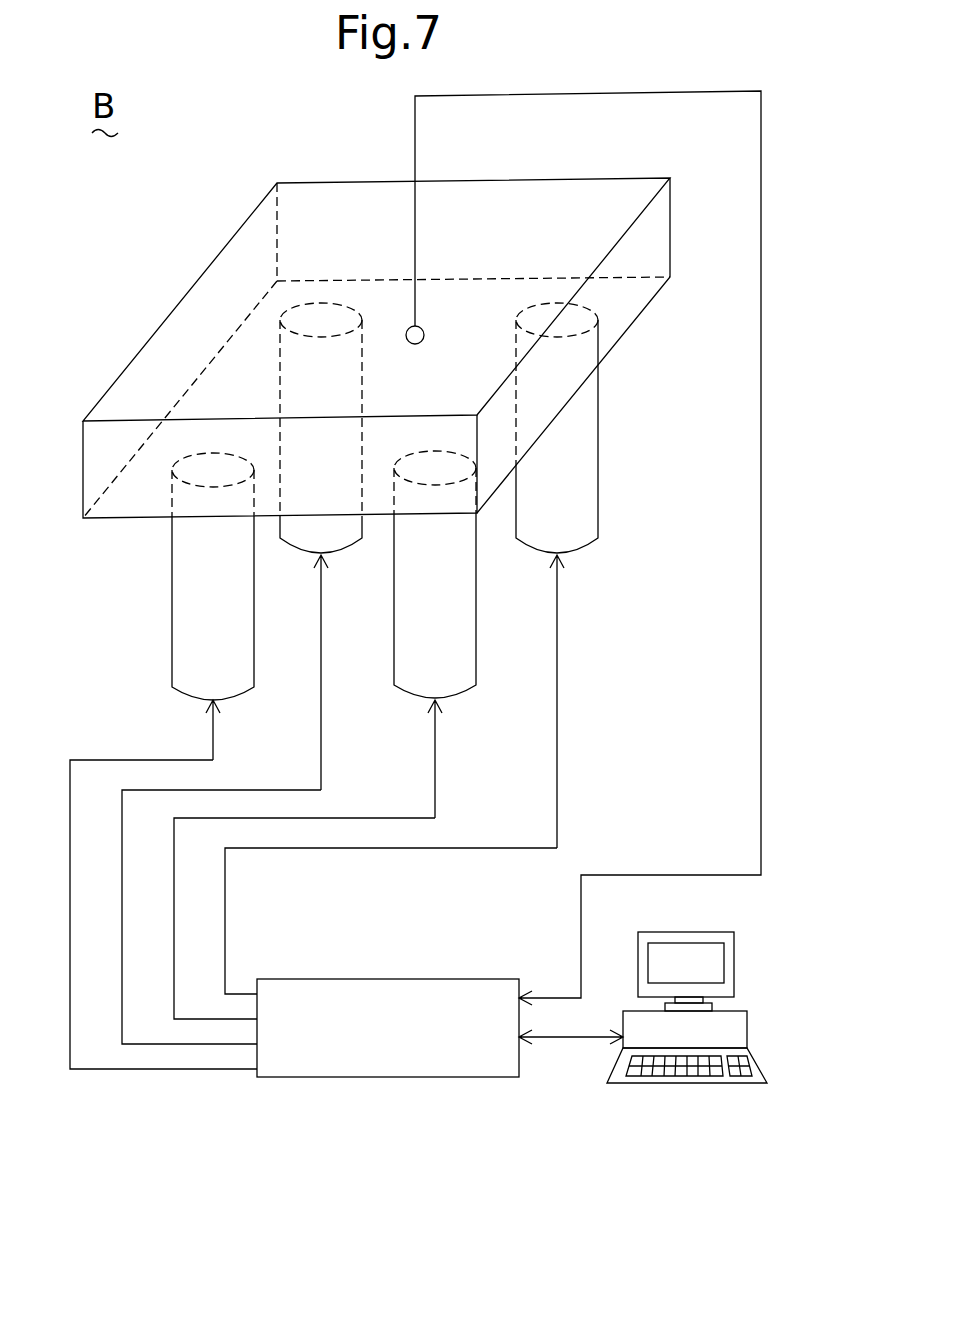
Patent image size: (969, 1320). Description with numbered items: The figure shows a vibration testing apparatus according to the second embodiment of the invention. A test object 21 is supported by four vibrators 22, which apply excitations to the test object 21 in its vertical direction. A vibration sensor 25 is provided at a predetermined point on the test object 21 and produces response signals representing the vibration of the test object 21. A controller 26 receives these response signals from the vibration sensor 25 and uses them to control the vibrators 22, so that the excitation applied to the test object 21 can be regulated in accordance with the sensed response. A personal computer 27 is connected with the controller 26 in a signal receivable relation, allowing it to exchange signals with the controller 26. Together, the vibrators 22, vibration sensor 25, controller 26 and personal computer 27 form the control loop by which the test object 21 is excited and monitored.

The test object 21 is at (607, 183).
The vibrator 22 is at (174, 616).
The vibration sensor 25 is at (425, 333).
The controller 26 is at (361, 1077).
The personal computer 27 is at (747, 1027).